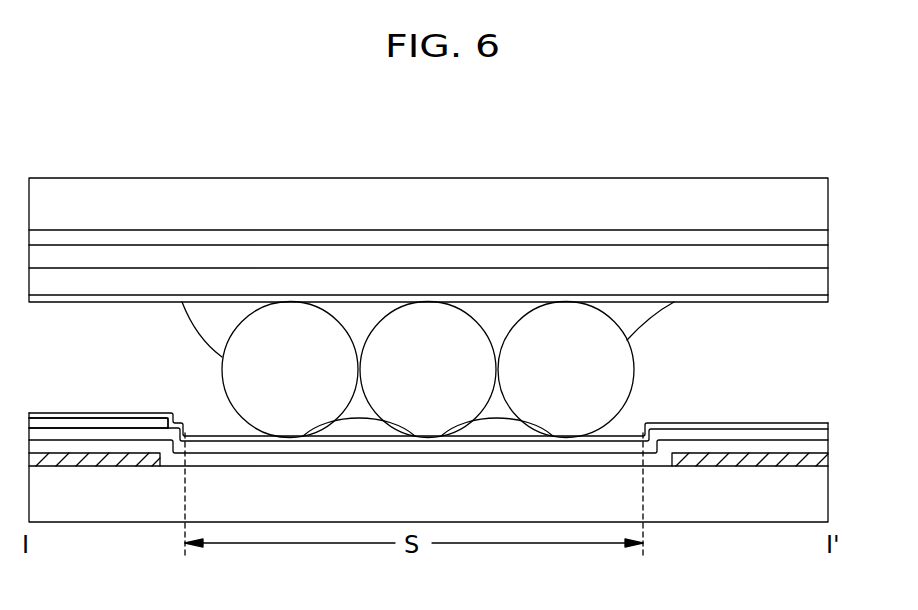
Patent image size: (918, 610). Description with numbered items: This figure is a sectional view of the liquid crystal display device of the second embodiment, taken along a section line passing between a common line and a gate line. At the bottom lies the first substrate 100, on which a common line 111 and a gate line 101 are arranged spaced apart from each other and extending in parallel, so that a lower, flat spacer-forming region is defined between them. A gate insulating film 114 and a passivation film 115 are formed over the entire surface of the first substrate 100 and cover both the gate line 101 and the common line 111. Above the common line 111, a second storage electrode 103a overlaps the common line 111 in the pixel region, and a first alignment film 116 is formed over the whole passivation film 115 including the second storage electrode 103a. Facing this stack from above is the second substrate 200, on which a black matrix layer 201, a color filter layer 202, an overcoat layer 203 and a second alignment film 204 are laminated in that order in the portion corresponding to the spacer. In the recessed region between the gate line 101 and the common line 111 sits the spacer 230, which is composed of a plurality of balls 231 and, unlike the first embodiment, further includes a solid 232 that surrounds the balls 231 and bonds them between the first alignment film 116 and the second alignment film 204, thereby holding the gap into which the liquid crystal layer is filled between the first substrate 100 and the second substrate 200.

The second substrate 200 is at (822, 201).
The black matrix layer 201 is at (822, 232).
The color filter layer 202 is at (822, 259).
The overcoat layer 203 is at (822, 286).
The second alignment film 204 is at (815, 298).
The spacer 230 is at (745, 320).
The balls 231 is at (606, 364).
The solid 232 is at (633, 316).
The second storage electrode 103a is at (90, 425).
The first alignment film 116 is at (818, 422).
The passivation film 115 is at (822, 432).
The gate insulating film 114 is at (822, 448).
The common line 111 is at (114, 462).
The gate line 101 is at (738, 458).
The first substrate 100 is at (822, 488).